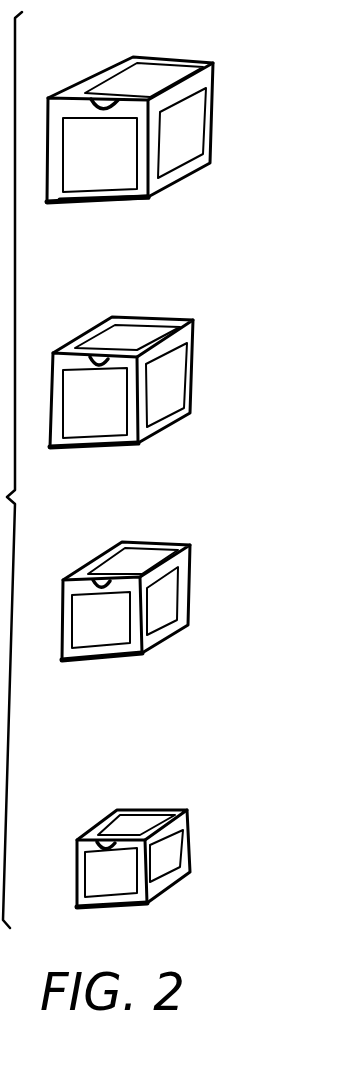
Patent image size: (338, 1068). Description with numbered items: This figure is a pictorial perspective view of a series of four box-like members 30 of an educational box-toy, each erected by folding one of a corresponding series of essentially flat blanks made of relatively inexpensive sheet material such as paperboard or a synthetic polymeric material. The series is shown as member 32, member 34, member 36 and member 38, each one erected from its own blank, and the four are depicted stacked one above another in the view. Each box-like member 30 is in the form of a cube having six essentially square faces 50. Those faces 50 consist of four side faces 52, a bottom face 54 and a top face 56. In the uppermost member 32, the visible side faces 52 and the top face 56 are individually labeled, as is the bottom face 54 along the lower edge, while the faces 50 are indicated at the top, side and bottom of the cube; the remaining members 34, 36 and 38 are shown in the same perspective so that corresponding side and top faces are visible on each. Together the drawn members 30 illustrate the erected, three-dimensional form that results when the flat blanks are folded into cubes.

The box-like member 30 is at (179, 462).
The member 32 is at (179, 139).
The member 34 is at (195, 387).
The member 36 is at (193, 607).
The member 38 is at (193, 858).
The face 50 is at (199, 65).
The side face 52 is at (198, 128).
The bottom face 54 is at (163, 190).
The top face 56 is at (97, 87).